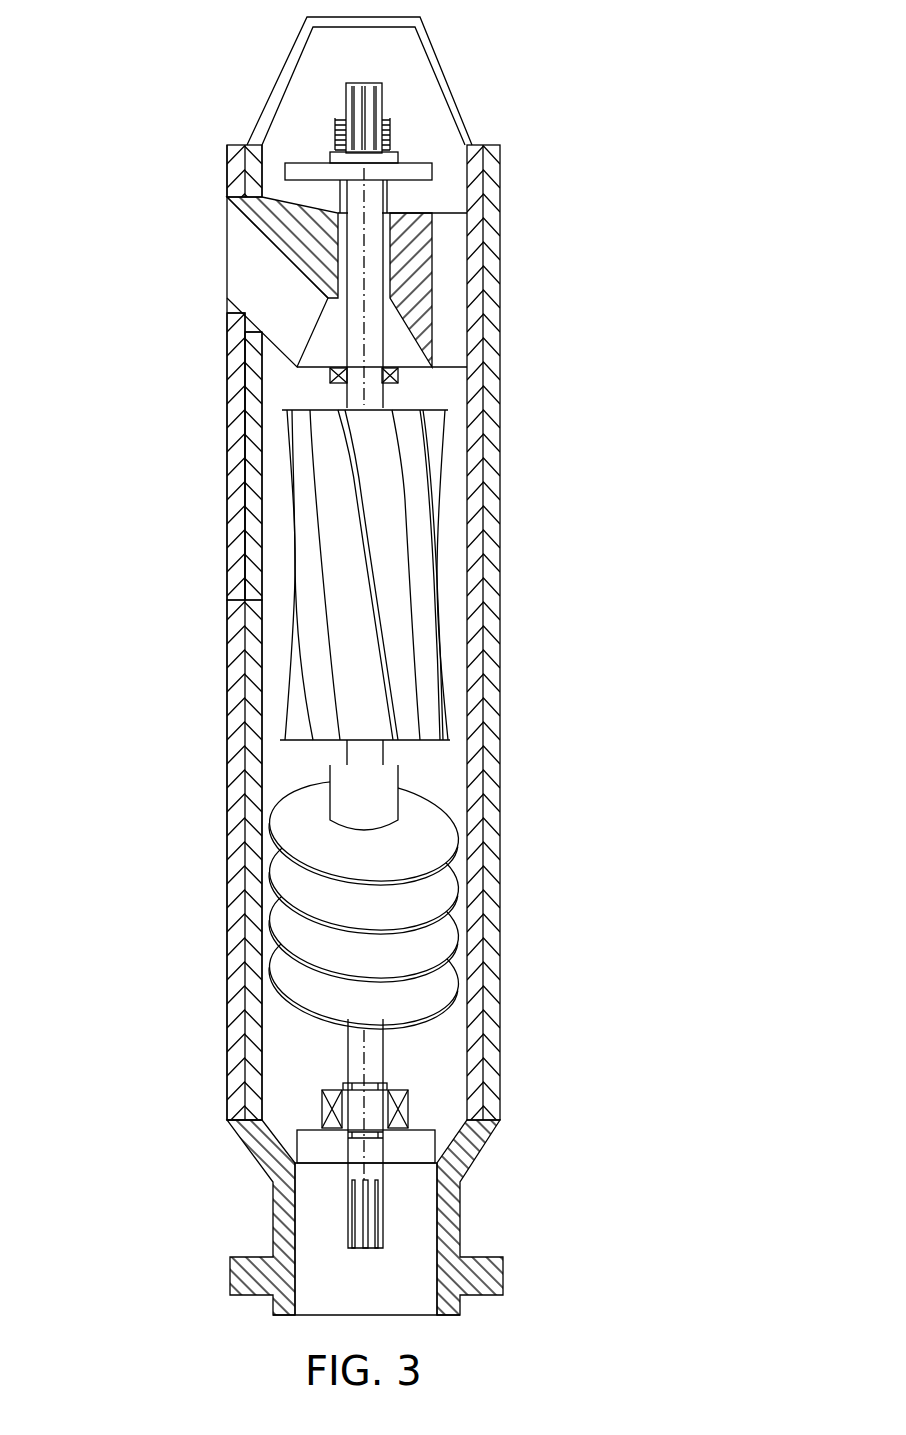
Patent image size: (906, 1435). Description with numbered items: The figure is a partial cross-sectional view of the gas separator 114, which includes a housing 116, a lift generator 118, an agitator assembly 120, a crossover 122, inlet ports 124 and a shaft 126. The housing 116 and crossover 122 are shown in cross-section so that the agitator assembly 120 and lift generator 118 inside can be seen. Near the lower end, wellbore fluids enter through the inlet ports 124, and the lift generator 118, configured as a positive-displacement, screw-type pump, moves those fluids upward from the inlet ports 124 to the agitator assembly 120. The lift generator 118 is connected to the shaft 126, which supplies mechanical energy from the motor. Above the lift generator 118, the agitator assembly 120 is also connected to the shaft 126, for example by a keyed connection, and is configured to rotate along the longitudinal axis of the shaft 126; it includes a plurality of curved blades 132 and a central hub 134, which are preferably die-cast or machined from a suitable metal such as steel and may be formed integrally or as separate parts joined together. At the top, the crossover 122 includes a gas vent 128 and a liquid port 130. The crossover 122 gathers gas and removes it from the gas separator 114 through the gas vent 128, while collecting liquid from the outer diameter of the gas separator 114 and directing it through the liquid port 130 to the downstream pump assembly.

The gas separator 114 is at (637, 722).
The housing 116 is at (490, 408).
The lift generator 118 is at (209, 893).
The agitator assembly 120 is at (209, 572).
The crossover 122 is at (330, 353).
The inlet ports 124 is at (247, 1147).
The shaft 126 is at (383, 1060).
The gas vent 128 is at (245, 280).
The liquid port 130 is at (448, 300).
The curved blades 132 is at (305, 485).
The central hub 134 is at (347, 663).